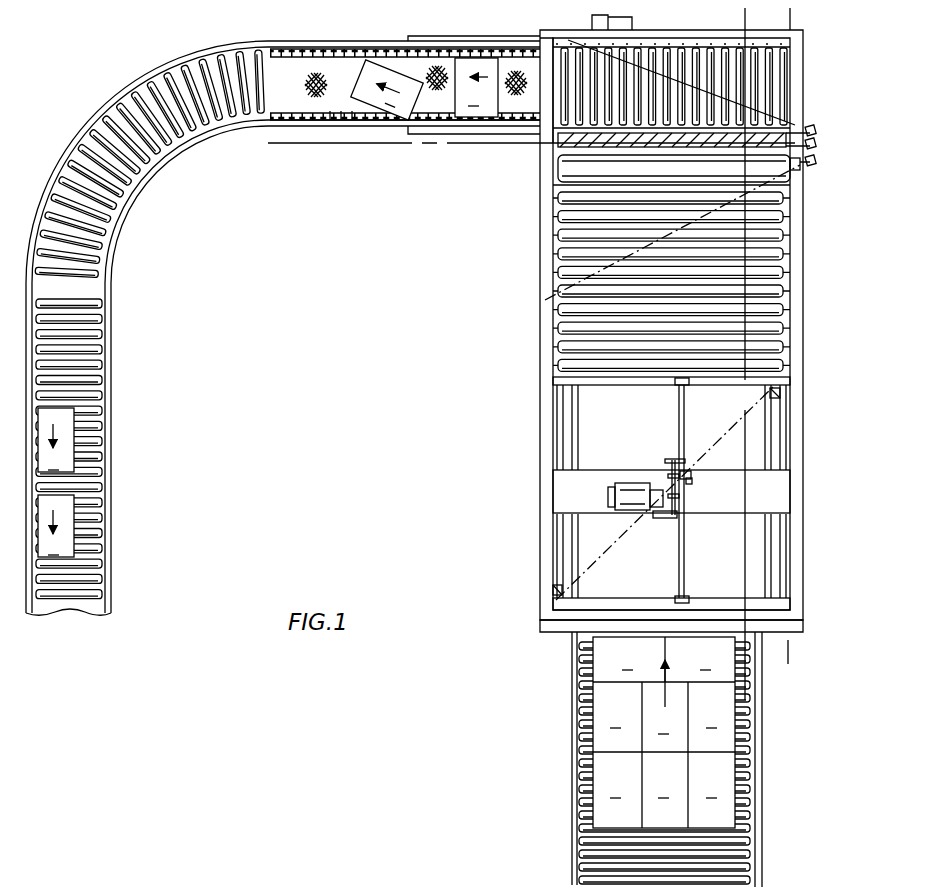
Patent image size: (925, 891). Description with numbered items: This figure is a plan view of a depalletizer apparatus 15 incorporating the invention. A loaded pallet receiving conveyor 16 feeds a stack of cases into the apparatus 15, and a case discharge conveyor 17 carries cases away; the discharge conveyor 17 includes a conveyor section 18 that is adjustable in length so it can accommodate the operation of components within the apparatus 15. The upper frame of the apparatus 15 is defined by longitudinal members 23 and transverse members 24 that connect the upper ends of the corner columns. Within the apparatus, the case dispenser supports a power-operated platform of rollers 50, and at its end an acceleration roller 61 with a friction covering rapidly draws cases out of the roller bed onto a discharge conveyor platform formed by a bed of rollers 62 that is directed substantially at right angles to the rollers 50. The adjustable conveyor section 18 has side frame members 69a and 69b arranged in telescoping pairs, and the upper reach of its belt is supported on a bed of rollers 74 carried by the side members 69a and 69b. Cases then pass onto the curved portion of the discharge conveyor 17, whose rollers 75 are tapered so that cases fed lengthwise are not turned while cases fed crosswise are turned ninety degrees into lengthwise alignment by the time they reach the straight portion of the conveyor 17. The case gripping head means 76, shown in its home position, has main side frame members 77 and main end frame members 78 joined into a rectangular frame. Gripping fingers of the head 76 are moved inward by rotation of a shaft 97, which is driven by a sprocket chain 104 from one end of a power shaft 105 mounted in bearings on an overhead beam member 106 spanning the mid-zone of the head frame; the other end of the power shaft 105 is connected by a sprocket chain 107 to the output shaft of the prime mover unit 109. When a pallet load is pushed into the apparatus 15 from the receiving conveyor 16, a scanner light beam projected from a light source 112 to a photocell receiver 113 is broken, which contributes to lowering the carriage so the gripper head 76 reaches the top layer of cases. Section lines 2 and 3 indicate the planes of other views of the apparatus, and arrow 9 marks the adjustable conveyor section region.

The section line 2- 2 is at (795, 20).
The section line 3- 3 is at (772, 20).
The transfer conveyor 9 is at (528, 122).
The depalletizer apparatus 15 is at (655, 359).
The loaded pallet receiving conveyor 16 is at (563, 770).
The case discharge conveyor 17 is at (147, 328).
The conveyor section 18 is at (430, 162).
The longitudinal members 23 is at (803, 310).
The transverse members 24 is at (545, 35).
The rollers 50 is at (778, 253).
The acceleration roller 61 is at (765, 139).
The rollers 62 is at (708, 46).
The side frame members 69a is at (417, 37).
The side frame members 69b is at (299, 42).
The rollers 74 is at (360, 122).
The rollers 75 is at (143, 200).
The case gripping head means 76 is at (659, 493).
The main side frame members 77 is at (563, 432).
The main end frame members 78 is at (613, 385).
The shaft 97 is at (688, 424).
The sprocket chain 104 is at (670, 458).
The power shaft 105 is at (660, 482).
The overhead beam member 106 is at (730, 504).
The sprocket chain 107 is at (663, 517).
The prime mover unit 109 is at (610, 496).
The light source 112 is at (782, 411).
The photocell receiver 113 is at (557, 590).